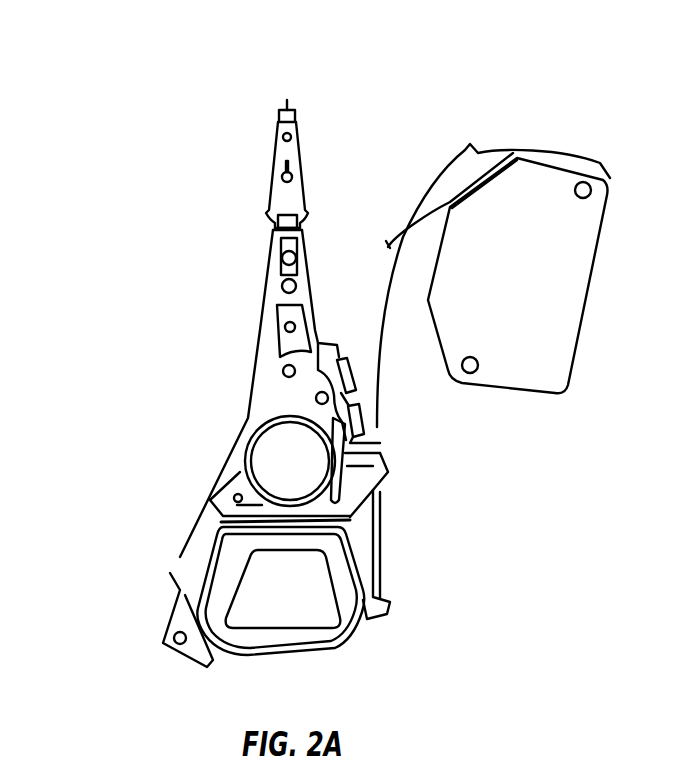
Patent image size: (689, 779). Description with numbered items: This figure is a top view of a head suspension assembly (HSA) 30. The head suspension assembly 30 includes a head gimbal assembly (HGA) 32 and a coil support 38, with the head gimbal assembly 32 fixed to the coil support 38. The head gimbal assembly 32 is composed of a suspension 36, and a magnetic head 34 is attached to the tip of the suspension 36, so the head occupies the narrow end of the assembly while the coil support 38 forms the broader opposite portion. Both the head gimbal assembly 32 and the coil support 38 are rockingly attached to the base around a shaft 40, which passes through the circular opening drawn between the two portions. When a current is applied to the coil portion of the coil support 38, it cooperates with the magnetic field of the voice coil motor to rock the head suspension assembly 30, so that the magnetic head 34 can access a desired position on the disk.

The head suspension assembly 30 is at (162, 49).
The head gimbal assembly 32 is at (118, 118).
The magnetic head 34 is at (278, 122).
The suspension 36 is at (277, 307).
The coil support 38 is at (122, 500).
The shaft 40 is at (260, 447).